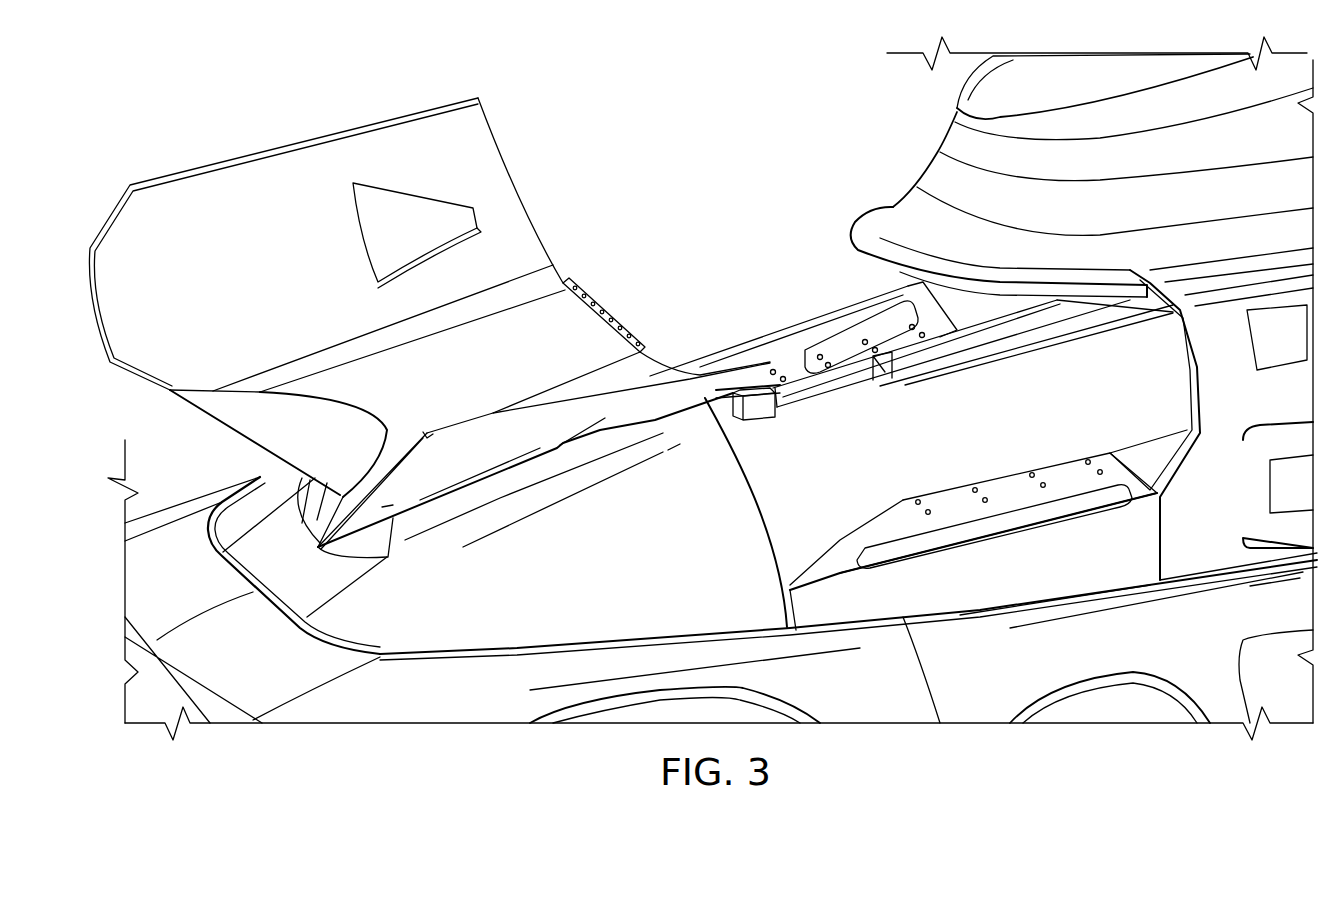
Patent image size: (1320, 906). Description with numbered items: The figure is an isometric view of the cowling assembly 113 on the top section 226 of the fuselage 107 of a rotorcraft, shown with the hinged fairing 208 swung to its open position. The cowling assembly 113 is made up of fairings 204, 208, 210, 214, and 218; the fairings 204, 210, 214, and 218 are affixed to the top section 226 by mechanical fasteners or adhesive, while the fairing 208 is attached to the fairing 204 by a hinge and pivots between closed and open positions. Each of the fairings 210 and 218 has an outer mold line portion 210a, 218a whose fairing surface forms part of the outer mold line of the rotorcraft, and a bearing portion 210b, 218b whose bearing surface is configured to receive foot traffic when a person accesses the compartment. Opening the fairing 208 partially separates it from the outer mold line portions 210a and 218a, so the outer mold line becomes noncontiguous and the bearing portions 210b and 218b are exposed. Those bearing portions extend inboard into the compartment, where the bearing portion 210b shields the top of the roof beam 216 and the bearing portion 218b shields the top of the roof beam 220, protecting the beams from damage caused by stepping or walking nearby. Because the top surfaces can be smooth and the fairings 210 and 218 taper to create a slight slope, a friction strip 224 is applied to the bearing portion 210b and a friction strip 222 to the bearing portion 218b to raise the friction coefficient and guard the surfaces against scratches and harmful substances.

The cowling assembly 113 is at (627, 135).
The fuselage 107 is at (228, 490).
The fairing 204 is at (427, 628).
The fairing 208 is at (290, 165).
The fairing 210 is at (888, 630).
The outer mold line portion 210a is at (992, 572).
The bearing portion 210b is at (830, 560).
The fairing 214 is at (1200, 545).
The roof beam 216 is at (1142, 455).
The fairing 218 is at (911, 424).
The outer mold line portion 218a is at (705, 400).
The bearing portion 218b is at (850, 360).
The roof beam 220 is at (950, 365).
The friction strip 222 is at (808, 333).
The friction strip 224 is at (880, 540).
The top section 226 is at (187, 570).